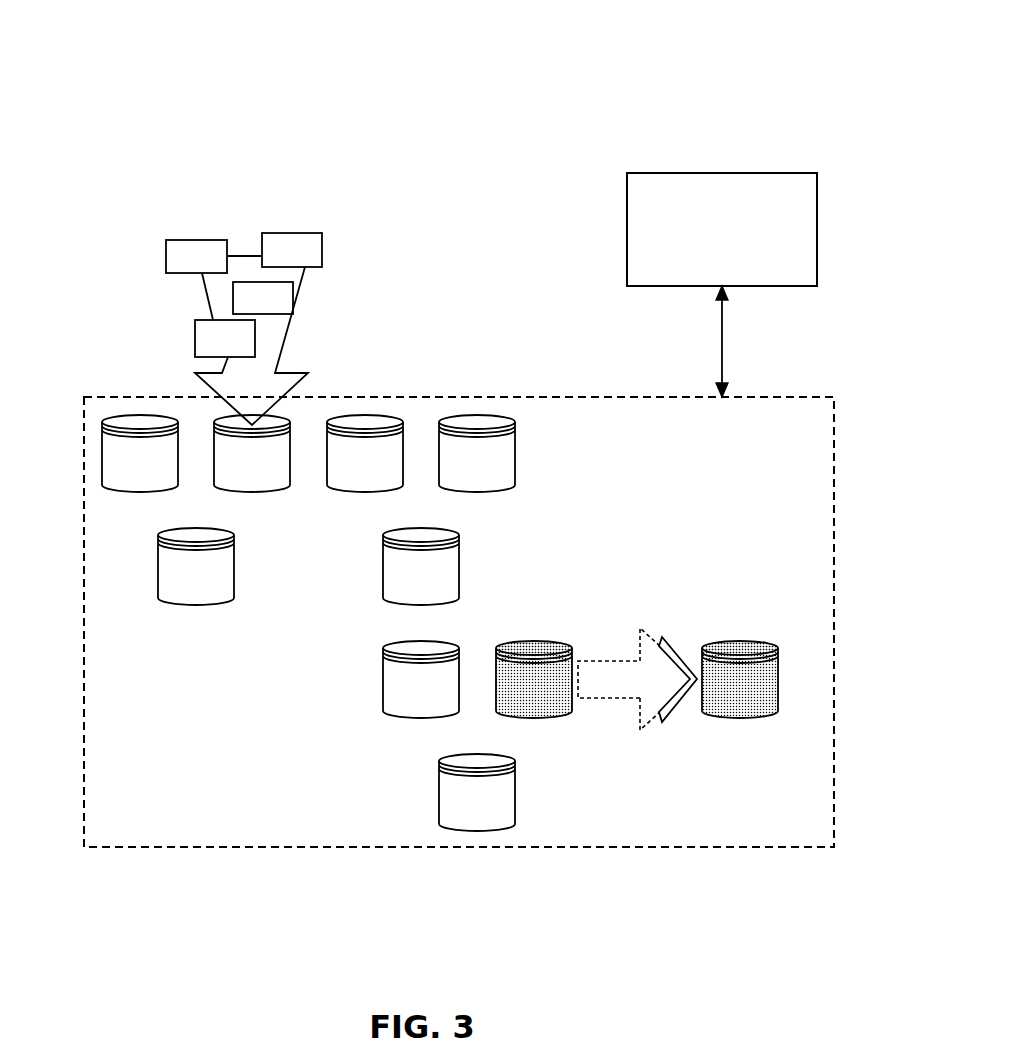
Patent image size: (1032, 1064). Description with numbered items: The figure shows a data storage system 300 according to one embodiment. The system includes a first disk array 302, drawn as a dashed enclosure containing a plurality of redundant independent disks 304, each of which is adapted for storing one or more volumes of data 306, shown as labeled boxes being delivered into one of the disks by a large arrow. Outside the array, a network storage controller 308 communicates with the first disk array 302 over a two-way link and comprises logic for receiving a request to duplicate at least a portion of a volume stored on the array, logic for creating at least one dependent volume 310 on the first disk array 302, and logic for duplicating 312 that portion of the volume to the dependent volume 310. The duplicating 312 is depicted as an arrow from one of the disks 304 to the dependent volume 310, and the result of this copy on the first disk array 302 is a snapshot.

The data storage system 300 is at (318, 98).
The first disk array 302 is at (732, 847).
The redundant independent disks 304 is at (120, 476).
The volumes of data 306 is at (177, 268).
The network storage controller 308 is at (702, 240).
The dependent volume 310 is at (720, 702).
The duplicating 312 is at (613, 691).